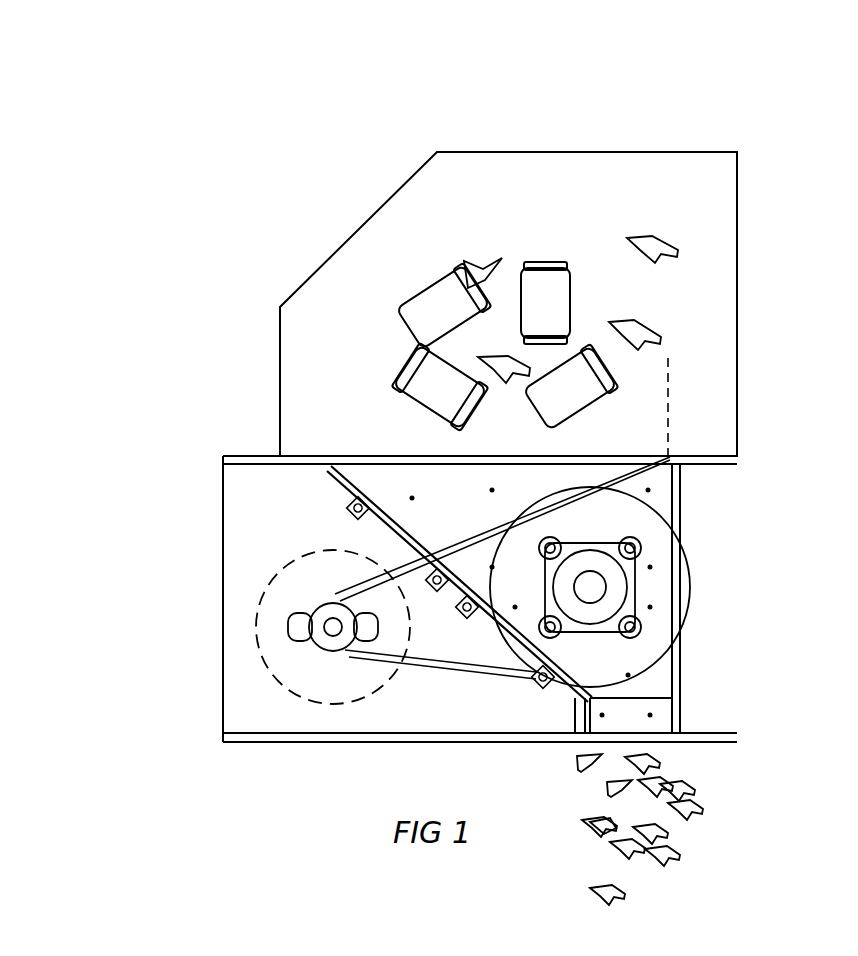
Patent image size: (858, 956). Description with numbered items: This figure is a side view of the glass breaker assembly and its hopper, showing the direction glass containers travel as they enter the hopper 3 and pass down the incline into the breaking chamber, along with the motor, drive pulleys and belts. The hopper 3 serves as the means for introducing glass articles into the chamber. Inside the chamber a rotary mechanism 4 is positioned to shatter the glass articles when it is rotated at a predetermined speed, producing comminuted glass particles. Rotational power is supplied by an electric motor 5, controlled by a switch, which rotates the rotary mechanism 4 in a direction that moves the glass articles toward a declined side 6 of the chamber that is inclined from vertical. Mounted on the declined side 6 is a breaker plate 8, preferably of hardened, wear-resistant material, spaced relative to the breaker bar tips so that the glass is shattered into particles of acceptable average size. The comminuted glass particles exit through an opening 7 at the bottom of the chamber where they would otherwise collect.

The hopper 3 is at (573, 152).
The rotary mechanism 4 is at (693, 573).
The electric motor 5 is at (275, 577).
The declined side 6 is at (402, 540).
The opening 7 is at (698, 830).
The breaker plate 8 is at (400, 527).